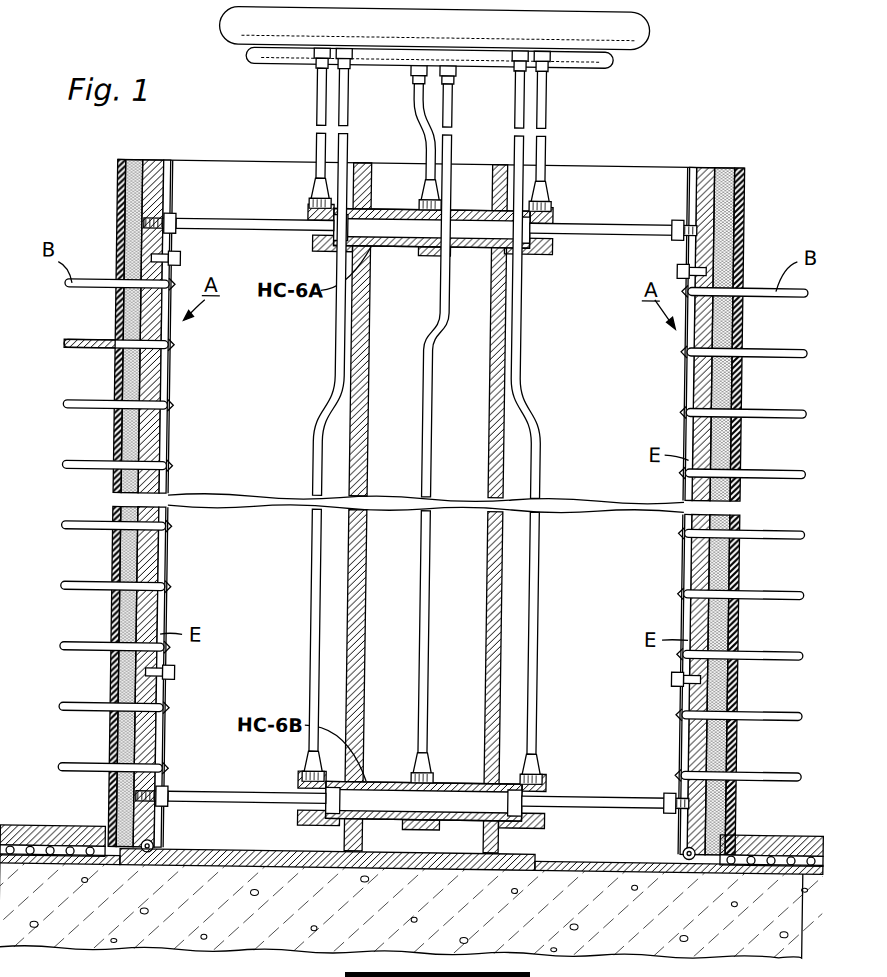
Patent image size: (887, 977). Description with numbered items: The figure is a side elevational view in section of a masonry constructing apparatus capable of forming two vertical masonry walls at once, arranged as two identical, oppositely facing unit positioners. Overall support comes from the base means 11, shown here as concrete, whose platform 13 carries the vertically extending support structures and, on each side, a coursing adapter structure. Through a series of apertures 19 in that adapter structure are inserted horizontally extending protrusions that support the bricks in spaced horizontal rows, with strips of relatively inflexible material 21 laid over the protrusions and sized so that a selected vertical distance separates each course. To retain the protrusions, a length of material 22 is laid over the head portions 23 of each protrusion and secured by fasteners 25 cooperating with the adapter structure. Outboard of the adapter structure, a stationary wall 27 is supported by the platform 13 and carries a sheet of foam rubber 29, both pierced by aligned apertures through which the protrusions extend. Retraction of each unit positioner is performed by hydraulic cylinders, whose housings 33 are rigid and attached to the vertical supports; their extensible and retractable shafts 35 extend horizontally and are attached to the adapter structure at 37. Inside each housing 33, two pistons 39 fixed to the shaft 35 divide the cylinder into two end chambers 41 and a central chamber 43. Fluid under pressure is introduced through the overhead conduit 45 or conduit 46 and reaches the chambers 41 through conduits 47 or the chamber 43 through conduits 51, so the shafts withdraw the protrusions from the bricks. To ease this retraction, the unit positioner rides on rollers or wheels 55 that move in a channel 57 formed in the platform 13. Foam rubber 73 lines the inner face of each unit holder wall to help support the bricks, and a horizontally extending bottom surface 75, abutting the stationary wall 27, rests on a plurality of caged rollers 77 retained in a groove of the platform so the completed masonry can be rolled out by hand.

The base means 11 is at (141, 953).
The platform 13 is at (467, 858).
The apertures 19 is at (173, 563).
The strips of relatively inflexible material 21 is at (82, 338).
The length of material 22 is at (171, 433).
The head portions 23 is at (169, 467).
The fasteners 25 is at (177, 264).
The stationary wall 27 is at (720, 806).
The foam rubber 29 is at (114, 216).
The housing 33 is at (475, 252).
The extensible and retractable shafts 35 is at (222, 222).
The shaft attachment 37 is at (165, 222).
The pistons 39 is at (336, 222).
The chambers 41 is at (308, 242).
The chamber 43 is at (415, 232).
The conduit 45 is at (623, 22).
The conduit 46 is at (491, 66).
The conduits 47 is at (309, 97).
The conduits 51 is at (420, 130).
The rollers or wheels 55 is at (160, 852).
The channel 57 is at (233, 862).
The foam rubber 73 is at (113, 166).
The bottom surface 75 is at (22, 836).
The rollers 77 is at (70, 852).